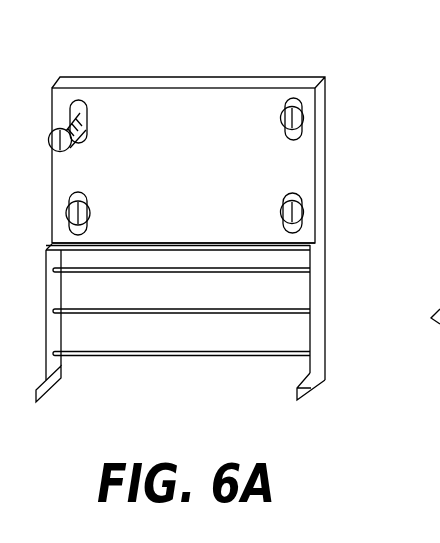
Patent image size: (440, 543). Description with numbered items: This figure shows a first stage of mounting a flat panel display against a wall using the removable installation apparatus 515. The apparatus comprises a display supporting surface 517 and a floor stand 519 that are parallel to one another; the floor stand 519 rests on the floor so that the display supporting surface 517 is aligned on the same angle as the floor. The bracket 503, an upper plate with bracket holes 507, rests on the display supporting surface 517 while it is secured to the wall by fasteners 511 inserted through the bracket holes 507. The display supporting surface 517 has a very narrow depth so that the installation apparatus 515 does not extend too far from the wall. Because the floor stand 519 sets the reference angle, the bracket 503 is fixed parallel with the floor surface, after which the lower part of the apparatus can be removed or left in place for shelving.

The bracket 503 is at (175, 120).
The bracket holes 507 is at (302, 88).
The fasteners 511 is at (305, 140).
The removable installation apparatus 515 is at (320, 292).
The display supporting surface 517 is at (303, 247).
The floor stand 519 is at (300, 388).